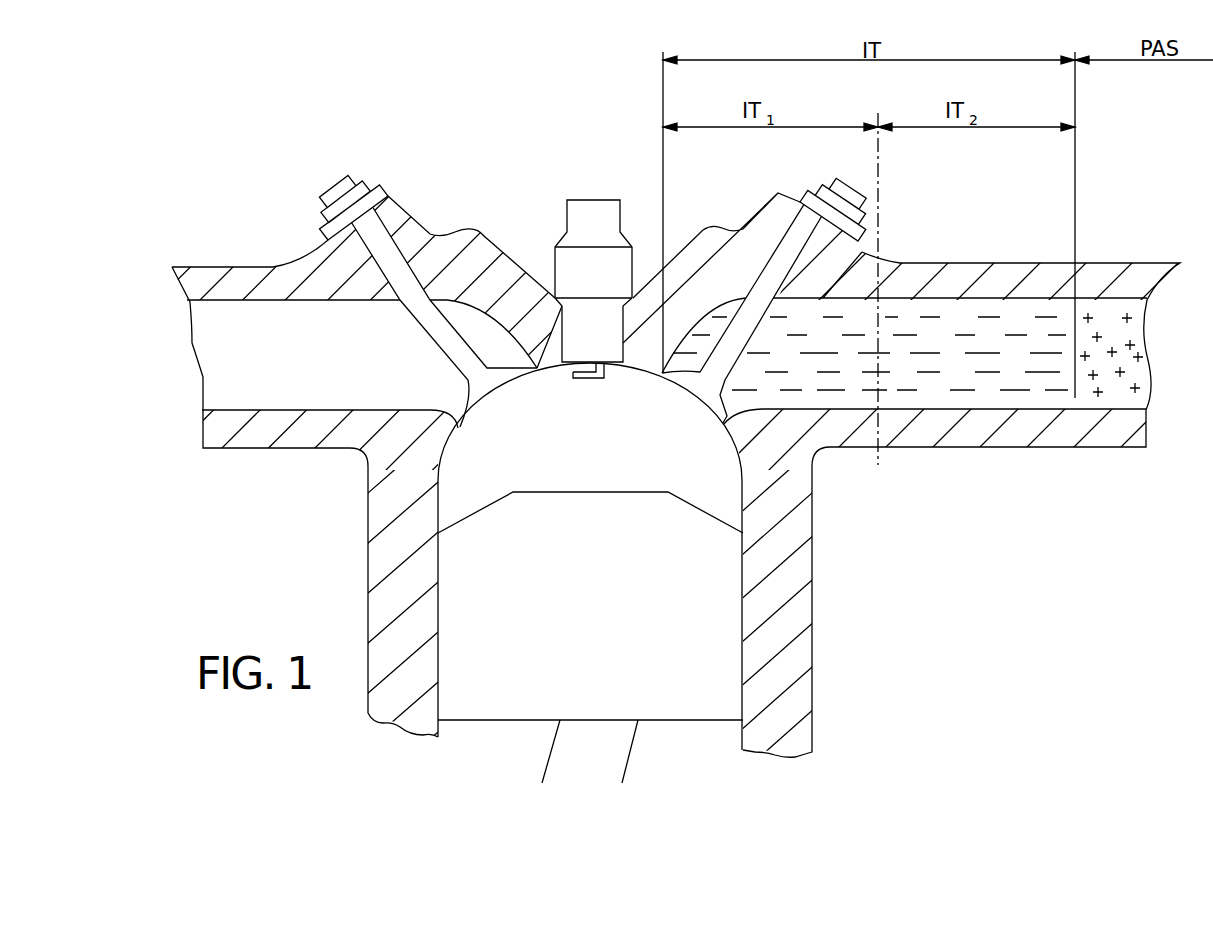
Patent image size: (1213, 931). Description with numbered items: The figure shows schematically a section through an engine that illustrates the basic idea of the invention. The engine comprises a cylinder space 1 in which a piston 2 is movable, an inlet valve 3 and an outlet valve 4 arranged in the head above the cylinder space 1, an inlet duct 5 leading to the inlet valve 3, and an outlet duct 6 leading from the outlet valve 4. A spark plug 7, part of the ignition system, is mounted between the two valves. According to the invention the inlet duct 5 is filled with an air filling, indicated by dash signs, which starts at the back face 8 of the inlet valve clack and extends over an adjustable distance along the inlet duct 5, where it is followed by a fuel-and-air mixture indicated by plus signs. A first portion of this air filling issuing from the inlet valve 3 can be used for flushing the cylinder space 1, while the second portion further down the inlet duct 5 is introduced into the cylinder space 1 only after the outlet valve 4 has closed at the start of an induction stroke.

The cylinder space 1 is at (630, 471).
The piston 2 is at (633, 631).
The inlet valve 3 is at (792, 276).
The outlet valve 4 is at (434, 313).
The inlet duct 5 is at (1033, 382).
The outlet duct 6 is at (284, 368).
The spark plug 7 is at (582, 217).
The back face of the inlet valve clack 8 is at (722, 418).